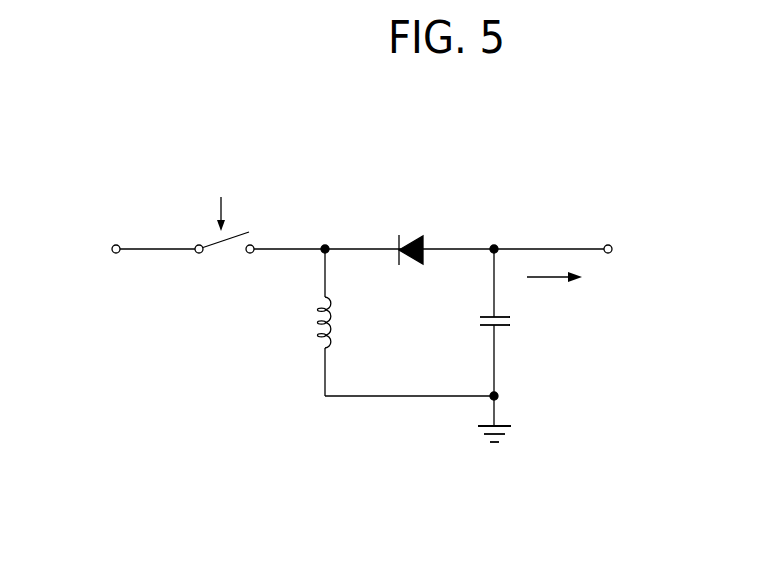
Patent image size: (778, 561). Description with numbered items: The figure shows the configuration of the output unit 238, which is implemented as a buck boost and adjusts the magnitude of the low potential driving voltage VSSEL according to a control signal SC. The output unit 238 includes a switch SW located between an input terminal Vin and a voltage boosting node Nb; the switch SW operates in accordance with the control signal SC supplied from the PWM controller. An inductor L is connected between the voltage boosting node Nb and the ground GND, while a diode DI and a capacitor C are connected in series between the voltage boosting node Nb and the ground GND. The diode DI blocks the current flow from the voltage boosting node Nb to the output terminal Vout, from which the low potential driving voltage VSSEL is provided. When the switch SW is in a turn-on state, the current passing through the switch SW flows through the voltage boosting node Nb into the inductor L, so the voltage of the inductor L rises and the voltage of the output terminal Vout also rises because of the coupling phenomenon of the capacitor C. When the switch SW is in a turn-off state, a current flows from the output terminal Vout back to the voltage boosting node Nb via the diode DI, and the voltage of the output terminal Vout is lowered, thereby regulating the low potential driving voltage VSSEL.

The output unit 238 is at (143, 122).
The input terminal Vin is at (116, 237).
The switch SW is at (224, 255).
The control signal SC is at (221, 202).
The voltage boosting node Nb is at (326, 237).
The diode DI is at (411, 237).
The inductor L is at (335, 322).
The capacitor C is at (503, 323).
The ground GND is at (494, 448).
The output terminal Vout is at (606, 238).
The low potential driving voltage VSSEL is at (585, 278).